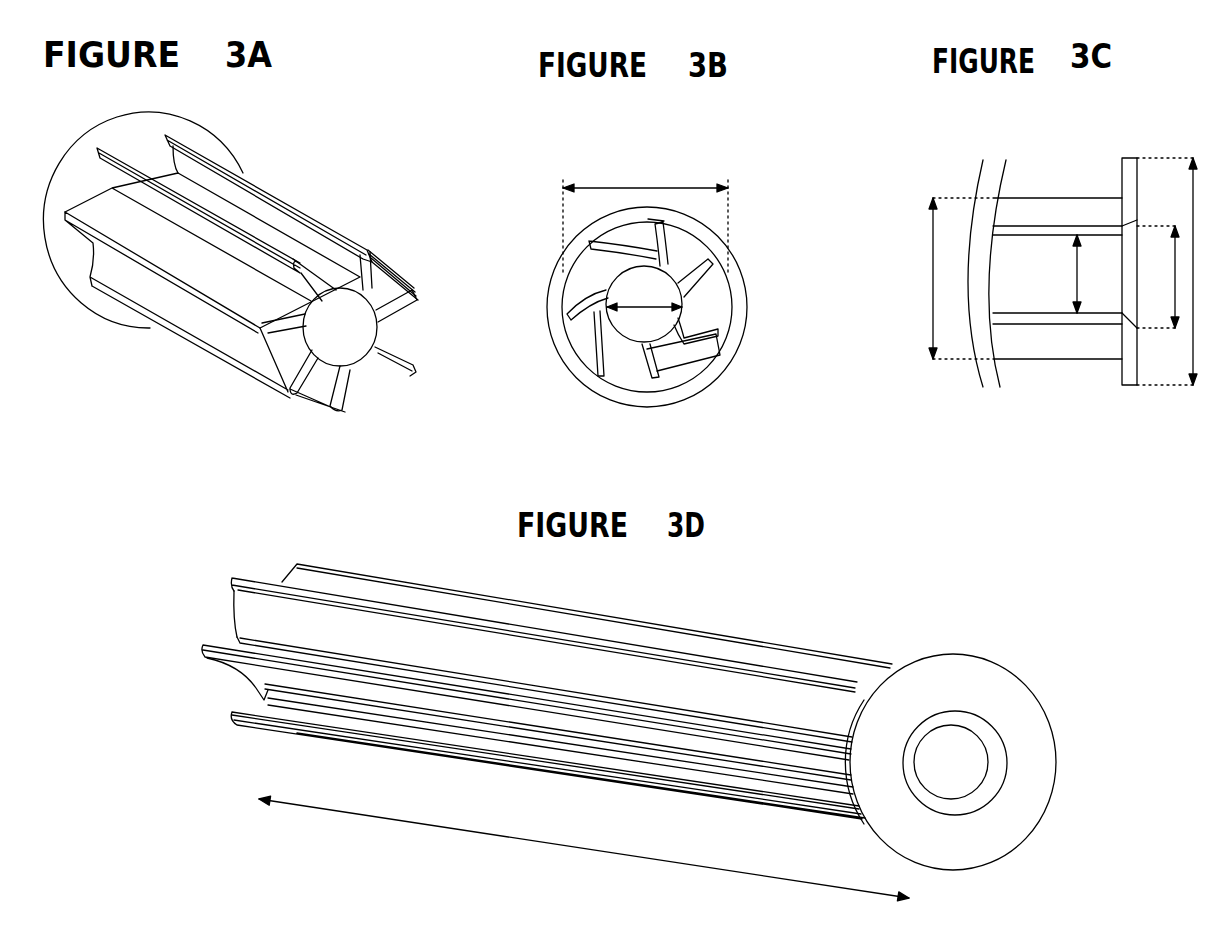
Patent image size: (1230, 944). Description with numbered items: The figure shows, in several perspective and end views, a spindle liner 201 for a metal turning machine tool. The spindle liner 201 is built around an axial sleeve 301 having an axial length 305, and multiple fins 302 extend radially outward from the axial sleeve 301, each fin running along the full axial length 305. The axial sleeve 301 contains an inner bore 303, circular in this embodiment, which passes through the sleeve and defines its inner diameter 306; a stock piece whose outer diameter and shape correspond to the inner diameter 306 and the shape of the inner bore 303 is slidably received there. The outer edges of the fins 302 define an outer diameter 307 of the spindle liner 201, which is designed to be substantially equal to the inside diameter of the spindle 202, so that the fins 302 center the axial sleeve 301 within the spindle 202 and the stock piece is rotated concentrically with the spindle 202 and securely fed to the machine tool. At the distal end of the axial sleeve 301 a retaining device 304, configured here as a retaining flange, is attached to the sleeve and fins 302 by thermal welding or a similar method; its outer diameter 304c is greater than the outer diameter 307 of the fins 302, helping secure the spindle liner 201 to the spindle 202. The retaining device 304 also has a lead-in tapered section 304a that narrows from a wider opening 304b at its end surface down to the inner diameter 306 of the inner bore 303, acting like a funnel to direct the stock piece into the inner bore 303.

In FIG. 3A, the spindle liner 201 is at (367, 214).
In FIG. 3B, the spindle liner 201 is at (690, 366).
In FIG. 3D, the spindle liner 201 is at (829, 590).
In FIG. 3B, the spindle 202 is at (734, 333).
In FIG. 3A, the axial sleeve 301 is at (379, 313).
In FIG. 3B, the axial sleeve 301 is at (602, 314).
In FIG. 3C, the axial sleeve 301 is at (1013, 320).
In FIG. 3D, the axial sleeve 301 is at (258, 699).
In FIG. 3A, the fins 302 is at (192, 318).
In FIG. 3B, the fins 302 is at (650, 376).
In FIG. 3C, the fins 302 is at (1097, 348).
In FIG. 3D, the fins 302 is at (232, 596).
In FIG. 3A, the inner bore 303 is at (338, 326).
In FIG. 3B, the inner bore 303 is at (644, 304).
In FIG. 3C, the inner bore 303 is at (1043, 290).
In FIG. 3D, the inner bore 303 is at (944, 738).
In FIG. 3A, the retaining device 304 is at (213, 148).
In FIG. 3C, the retaining device 304 is at (1123, 376).
In FIG. 3D, the retaining device 304 is at (1014, 699).
In FIG. 3C, the lead-in tapered section 304a is at (1133, 321).
In FIG. 3D, the lead-in tapered section 304a is at (1000, 761).
In FIG. 3C, the wider opening 304b is at (1160, 250).
In FIG. 3C, the outer diameter of retaining device 304c is at (1208, 373).
In FIG. 3D, the axial length 305 is at (420, 827).
In FIG. 3B, the inner diameter 306 is at (650, 300).
In FIG. 3C, the inner diameter 306 is at (1075, 293).
In FIG. 3B, the outer diameter 307 is at (933, 266).
In FIG. 3C, the outer diameter 307 is at (961, 278).